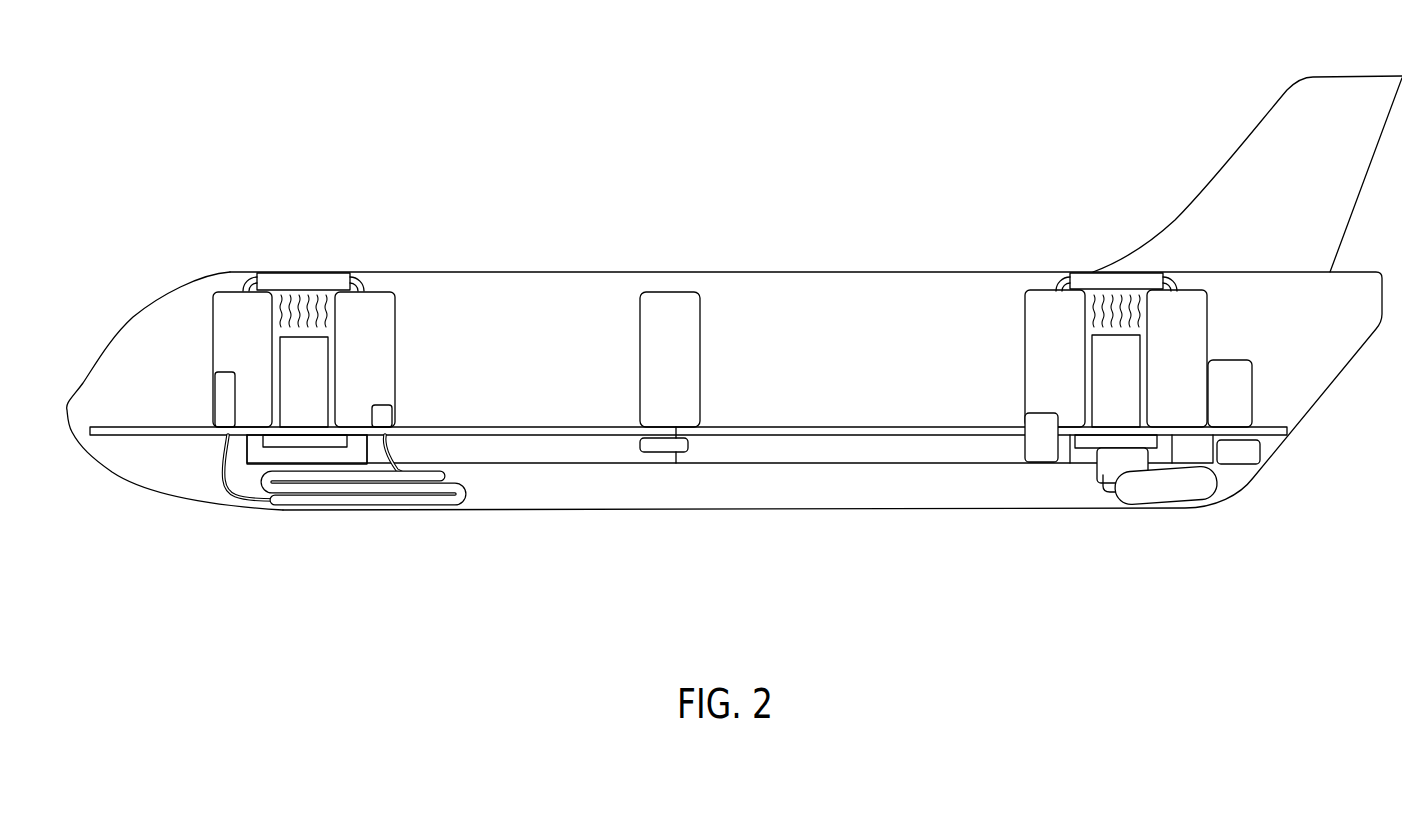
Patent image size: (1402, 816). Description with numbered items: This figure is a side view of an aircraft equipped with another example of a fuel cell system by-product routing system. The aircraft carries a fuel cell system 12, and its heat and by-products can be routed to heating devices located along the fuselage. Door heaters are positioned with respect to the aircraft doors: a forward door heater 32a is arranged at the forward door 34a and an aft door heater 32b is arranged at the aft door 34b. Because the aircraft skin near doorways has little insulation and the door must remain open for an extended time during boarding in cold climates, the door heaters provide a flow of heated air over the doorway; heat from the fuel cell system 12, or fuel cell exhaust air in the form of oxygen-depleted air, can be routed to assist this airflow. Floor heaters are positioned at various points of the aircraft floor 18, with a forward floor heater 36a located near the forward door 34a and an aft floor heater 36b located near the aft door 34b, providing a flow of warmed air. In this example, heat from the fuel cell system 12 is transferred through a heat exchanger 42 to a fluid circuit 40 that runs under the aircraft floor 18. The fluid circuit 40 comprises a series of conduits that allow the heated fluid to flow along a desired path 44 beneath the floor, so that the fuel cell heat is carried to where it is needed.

The fuel cell system 12 is at (1288, 360).
The aircraft floor 18 is at (113, 436).
The forward door heater 32a is at (308, 280).
The aft door heater 32b is at (1108, 278).
The forward door 34a is at (322, 392).
The aft door 34b is at (1135, 392).
The forward floor heater 36a is at (287, 442).
The aft floor heater 36b is at (1088, 440).
The fluid circuit 40 is at (358, 490).
The heat exchanger 42 is at (385, 415).
The desired path 44 is at (848, 463).